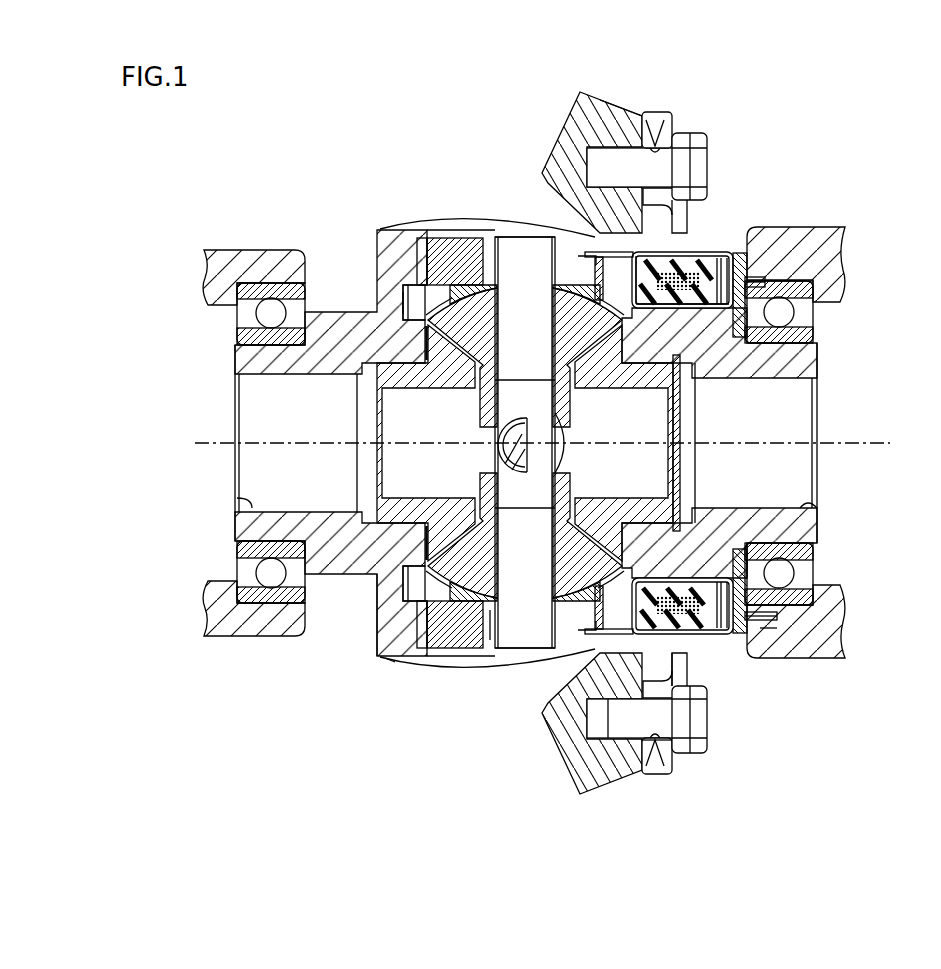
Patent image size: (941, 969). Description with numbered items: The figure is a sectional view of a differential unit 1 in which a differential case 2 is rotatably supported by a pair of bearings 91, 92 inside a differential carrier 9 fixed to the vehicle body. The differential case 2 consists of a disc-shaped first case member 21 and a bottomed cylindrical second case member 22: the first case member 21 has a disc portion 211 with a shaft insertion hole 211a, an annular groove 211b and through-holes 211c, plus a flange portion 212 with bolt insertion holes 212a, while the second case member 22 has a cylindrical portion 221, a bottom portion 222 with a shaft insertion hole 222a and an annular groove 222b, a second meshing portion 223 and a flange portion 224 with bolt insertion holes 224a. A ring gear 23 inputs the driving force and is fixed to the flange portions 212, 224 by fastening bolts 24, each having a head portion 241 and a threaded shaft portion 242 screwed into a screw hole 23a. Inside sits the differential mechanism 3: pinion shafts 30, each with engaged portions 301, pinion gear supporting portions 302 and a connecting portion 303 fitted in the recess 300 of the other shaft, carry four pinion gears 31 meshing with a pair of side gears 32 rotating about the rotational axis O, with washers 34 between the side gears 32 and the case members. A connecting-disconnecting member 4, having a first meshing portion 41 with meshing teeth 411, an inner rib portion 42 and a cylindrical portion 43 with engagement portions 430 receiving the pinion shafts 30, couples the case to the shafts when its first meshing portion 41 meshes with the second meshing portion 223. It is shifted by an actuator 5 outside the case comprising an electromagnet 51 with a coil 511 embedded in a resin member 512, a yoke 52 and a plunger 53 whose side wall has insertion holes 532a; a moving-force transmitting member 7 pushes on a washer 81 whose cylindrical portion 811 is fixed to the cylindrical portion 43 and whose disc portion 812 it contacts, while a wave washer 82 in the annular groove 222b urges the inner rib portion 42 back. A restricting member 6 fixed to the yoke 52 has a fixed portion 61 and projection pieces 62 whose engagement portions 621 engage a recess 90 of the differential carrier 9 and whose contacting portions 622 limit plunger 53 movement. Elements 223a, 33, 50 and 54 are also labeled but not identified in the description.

The differential unit 1 is at (297, 187).
The differential case 2 is at (228, 533).
The first case member 21 is at (738, 443).
The disc portion 211 is at (677, 580).
The shaft insertion hole 211a is at (815, 507).
The annular groove 211b is at (672, 640).
The through-holes 211c is at (650, 640).
The flange portion 212 is at (662, 401).
The bolt insertion holes 212a is at (675, 140).
The second case member 22 is at (387, 453).
The cylindrical portion 221 is at (490, 216).
The bottom portion 222 is at (382, 625).
The shaft insertion hole 222a is at (255, 504).
The annular groove 222b is at (410, 587).
The second meshing portion 223 is at (423, 660).
The edge of bottom wall 223a is at (417, 659).
The flange portion 224 is at (641, 419).
The bolt insertion holes 224a is at (641, 140).
The ring gear 23 is at (578, 149).
The screw hole 23a is at (602, 104).
The fastening bolts 24 is at (702, 756).
The head portion 241 is at (697, 141).
The shaft portion 242 is at (618, 173).
The differential mechanism 3 is at (345, 412).
The pinion shafts 30 is at (526, 442).
The recess 300 is at (490, 430).
The engaged portions 301 is at (540, 273).
The pinion gear supporting portions 302 is at (540, 334).
The connecting portion 303 is at (592, 422).
The pinion gears 31 is at (477, 293).
The side gears 32 is at (387, 515).
The spherical washer 33 is at (447, 288).
The washers 34 is at (628, 533).
The connecting-disconnecting member 4 is at (458, 292).
The first meshing portion 41 is at (413, 241).
The meshing teeth 411 is at (425, 255).
The inner rib portion 42 is at (403, 290).
The cylindrical portion 43 is at (464, 661).
The engagement portions 430 is at (490, 640).
The actuator 5 is at (701, 236).
The plate 50 is at (717, 242).
The electromagnet 51 is at (773, 163).
The coil 511 is at (680, 252).
The resin member 512 is at (700, 257).
The yoke 52 is at (668, 305).
The plunger 53 is at (735, 255).
The insertion holes 532a is at (715, 633).
The cover plate 54 is at (700, 637).
The restricting member 6 is at (686, 643).
The fixed portion 61 is at (717, 298).
The projection pieces 62 is at (836, 428).
The engagement portion 621 is at (767, 620).
The contacting portion 622 is at (743, 613).
The moving-force transmitting member 7 is at (597, 248).
The washer 81 is at (583, 253).
The cylindrical portion 811 is at (605, 610).
The disc portion 812 is at (597, 630).
The wave washer 82 is at (403, 297).
The differential carrier 9 is at (240, 250).
The recess 90 is at (772, 632).
The bearing 91 is at (813, 330).
The bearing 92 is at (238, 332).
The rotational axis O is at (222, 443).